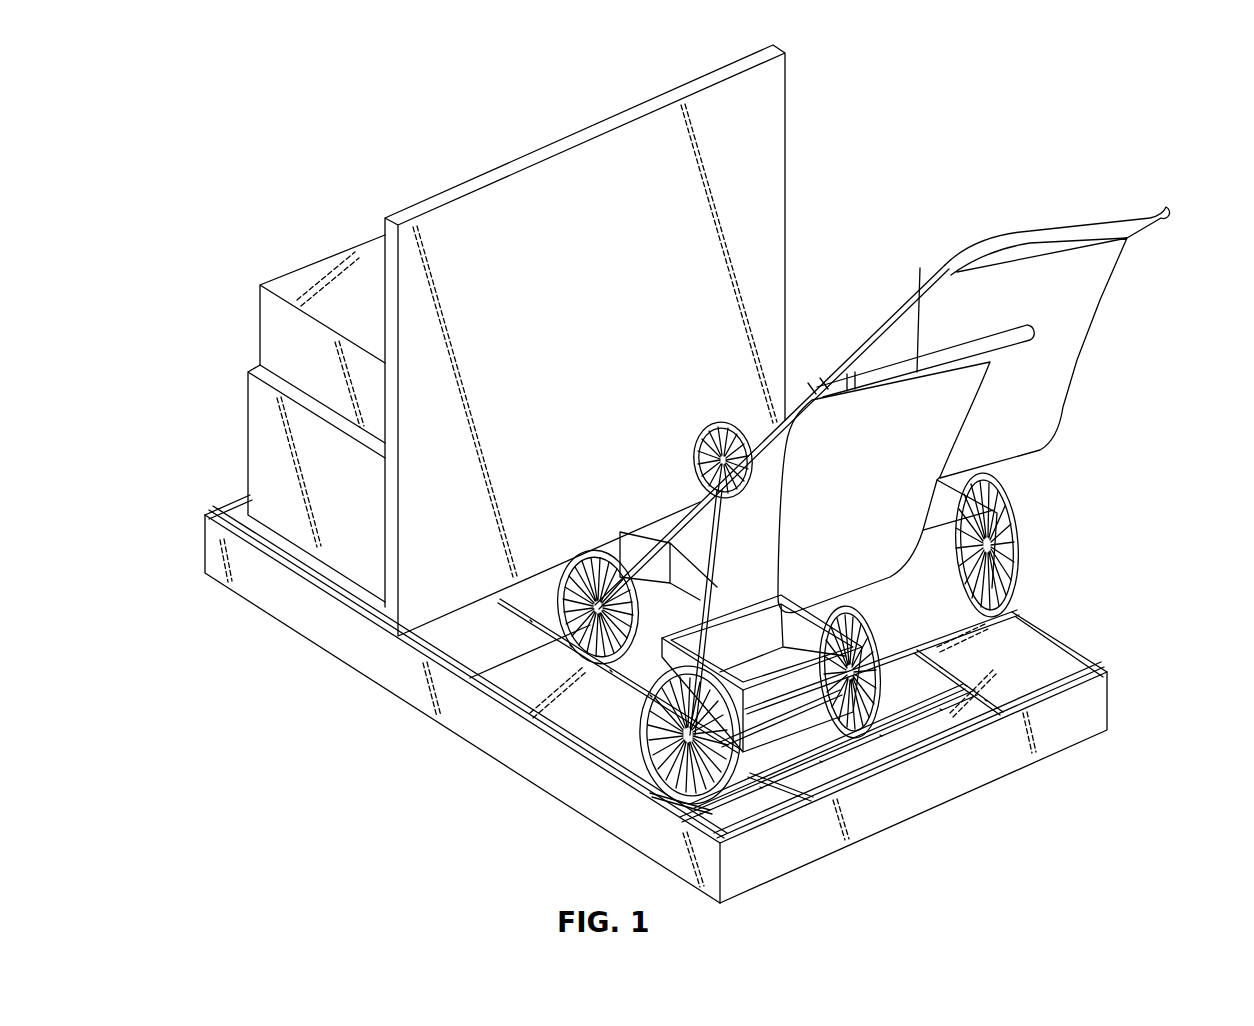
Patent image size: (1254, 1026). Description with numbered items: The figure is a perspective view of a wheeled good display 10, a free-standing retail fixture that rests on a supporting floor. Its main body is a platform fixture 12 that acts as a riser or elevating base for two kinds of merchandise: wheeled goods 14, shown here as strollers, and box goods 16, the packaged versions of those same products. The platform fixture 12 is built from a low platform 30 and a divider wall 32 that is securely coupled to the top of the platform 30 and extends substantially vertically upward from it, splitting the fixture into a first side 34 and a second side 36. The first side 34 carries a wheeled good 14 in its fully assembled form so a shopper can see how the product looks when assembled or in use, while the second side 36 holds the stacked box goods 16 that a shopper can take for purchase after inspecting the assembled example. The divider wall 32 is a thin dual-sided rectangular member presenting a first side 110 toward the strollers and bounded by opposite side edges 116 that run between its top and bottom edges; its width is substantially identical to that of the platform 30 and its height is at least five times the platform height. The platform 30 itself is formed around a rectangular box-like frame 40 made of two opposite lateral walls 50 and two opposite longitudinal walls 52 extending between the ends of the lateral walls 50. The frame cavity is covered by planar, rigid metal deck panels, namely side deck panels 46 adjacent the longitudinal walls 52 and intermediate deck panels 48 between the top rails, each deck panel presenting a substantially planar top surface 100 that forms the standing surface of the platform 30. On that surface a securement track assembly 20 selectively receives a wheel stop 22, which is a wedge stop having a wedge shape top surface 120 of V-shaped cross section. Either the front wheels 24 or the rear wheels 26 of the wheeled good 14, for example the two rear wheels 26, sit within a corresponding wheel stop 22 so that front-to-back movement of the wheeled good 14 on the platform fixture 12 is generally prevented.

The wheeled good display 10 is at (252, 110).
The platform fixture 12 is at (611, 321).
The wheeled good 14 is at (765, 544).
The box goods 16 is at (296, 281).
The securement track assembly 20 is at (683, 670).
The wheel stop 22 is at (803, 738).
The front wheel 24 is at (725, 420).
The rear wheel 26 is at (875, 738).
The platform 30 is at (292, 603).
The divider wall 32 is at (746, 228).
The first side 34 is at (430, 645).
The second side 36 is at (258, 531).
The frame 40 is at (240, 498).
The side deck panel 46 is at (288, 556).
The intermediate deck panel 48 is at (1005, 725).
The lateral wall 50 is at (1088, 720).
The longitudinal wall 52 is at (508, 752).
The top surface 100 is at (965, 708).
The first side 110 is at (760, 262).
The side edge 116 is at (709, 76).
The wedge shape top surface 120 is at (755, 774).